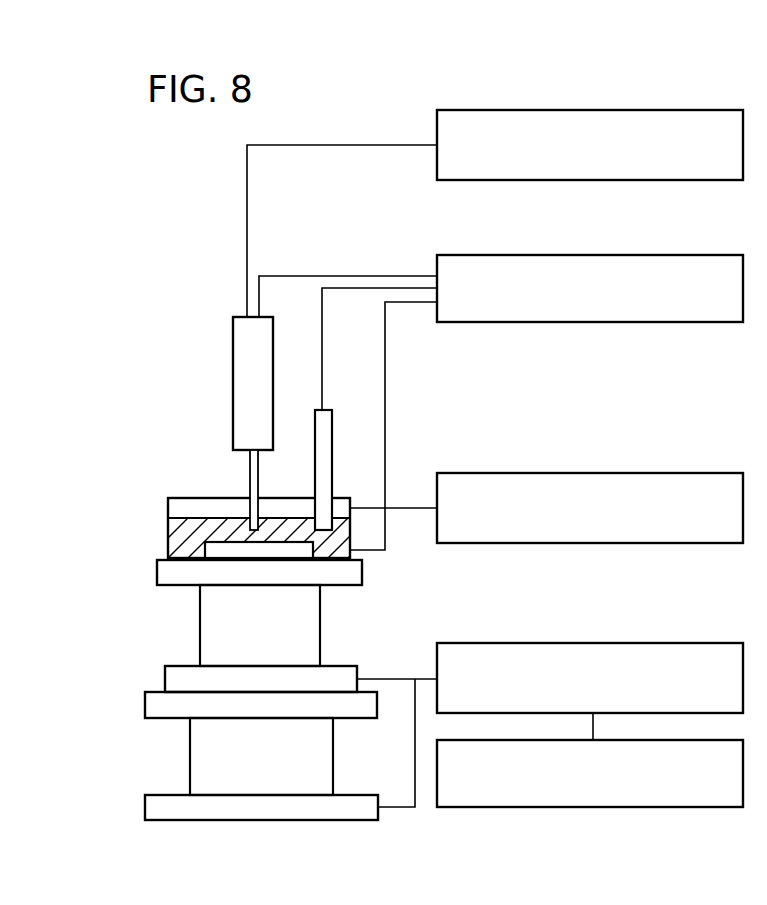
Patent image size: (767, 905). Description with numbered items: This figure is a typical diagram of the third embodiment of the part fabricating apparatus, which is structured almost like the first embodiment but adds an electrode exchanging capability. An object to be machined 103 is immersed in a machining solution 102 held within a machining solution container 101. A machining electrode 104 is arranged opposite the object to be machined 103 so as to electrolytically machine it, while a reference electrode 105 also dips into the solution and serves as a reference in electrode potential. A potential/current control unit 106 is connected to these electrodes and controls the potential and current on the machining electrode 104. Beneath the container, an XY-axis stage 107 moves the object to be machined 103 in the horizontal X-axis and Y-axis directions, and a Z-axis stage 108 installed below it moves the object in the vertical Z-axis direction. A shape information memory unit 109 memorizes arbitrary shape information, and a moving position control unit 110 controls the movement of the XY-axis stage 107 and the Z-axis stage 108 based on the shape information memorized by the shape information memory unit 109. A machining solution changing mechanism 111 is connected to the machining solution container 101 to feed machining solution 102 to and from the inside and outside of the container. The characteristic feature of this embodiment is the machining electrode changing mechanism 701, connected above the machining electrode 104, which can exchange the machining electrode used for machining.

The machining electrode changing mechanism 701 is at (595, 110).
The potential/current control unit 106 is at (597, 255).
The machining solution changing mechanism 111 is at (592, 473).
The moving position control unit 110 is at (598, 643).
The shape information memory unit 109 is at (612, 807).
The machining solution container 101 is at (345, 505).
The machining solution 102 is at (178, 530).
The object to be machined 103 is at (210, 551).
The machining electrode 104 is at (253, 470).
The reference electrode 105 is at (325, 435).
The XY-axis stage 107 is at (208, 638).
The Z-axis stage 108 is at (200, 765).